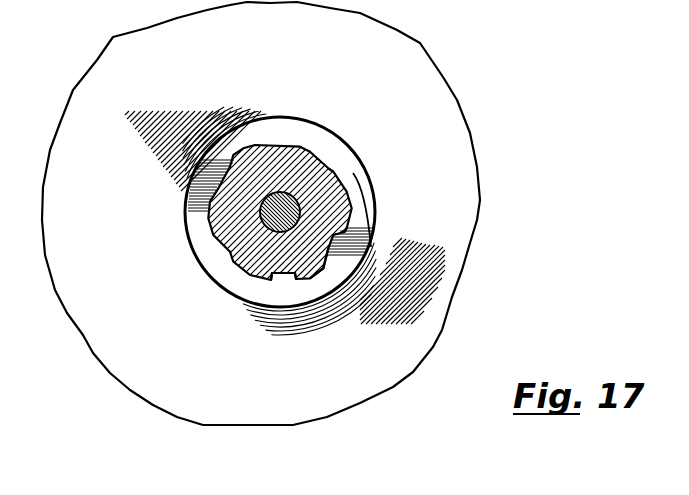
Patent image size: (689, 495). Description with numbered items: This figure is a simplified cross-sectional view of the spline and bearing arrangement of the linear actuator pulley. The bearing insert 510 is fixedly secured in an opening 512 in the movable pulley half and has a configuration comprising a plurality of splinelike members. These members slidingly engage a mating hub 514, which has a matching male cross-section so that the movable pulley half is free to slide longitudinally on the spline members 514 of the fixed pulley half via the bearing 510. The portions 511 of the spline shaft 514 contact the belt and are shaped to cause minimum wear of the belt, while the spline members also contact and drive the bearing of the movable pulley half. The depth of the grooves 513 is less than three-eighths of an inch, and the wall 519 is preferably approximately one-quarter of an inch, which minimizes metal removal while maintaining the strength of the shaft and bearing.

The bearing insert 510 is at (367, 187).
The portions of spline shaft 511 is at (352, 214).
The opening 512 is at (352, 147).
The grooves 513 is at (329, 169).
The mating hub 514 is at (312, 265).
The wall 519 is at (277, 281).